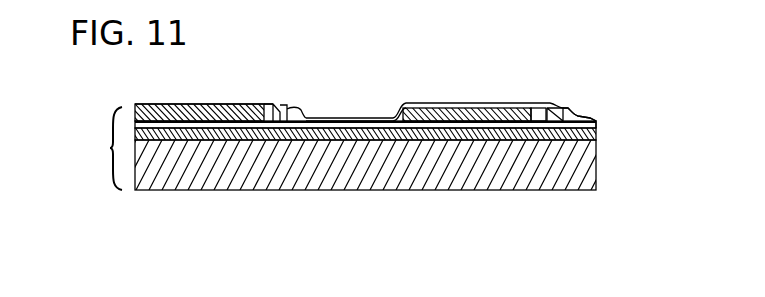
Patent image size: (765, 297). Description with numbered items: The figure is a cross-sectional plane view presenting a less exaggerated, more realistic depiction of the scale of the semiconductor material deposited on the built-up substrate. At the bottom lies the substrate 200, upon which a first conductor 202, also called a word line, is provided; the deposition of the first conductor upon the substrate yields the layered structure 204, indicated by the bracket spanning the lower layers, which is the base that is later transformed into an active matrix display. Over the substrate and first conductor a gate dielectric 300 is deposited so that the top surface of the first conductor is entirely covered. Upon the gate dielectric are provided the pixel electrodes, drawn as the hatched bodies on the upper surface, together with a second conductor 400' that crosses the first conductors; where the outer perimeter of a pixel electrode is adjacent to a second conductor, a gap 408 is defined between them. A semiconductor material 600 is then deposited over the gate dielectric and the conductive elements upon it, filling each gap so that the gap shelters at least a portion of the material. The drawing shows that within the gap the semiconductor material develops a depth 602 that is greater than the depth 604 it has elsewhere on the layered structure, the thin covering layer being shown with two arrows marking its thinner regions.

The substrate 200 is at (597, 185).
The first conductor 202 is at (597, 139).
The layered structure 204 is at (95, 148).
The gate dielectric 300 is at (597, 124).
The second conductor 400' is at (305, 87).
The gap 408 is at (540, 105).
The semiconductor material 600 is at (582, 118).
The depth 602 is at (534, 90).
The depth 604 is at (366, 110).